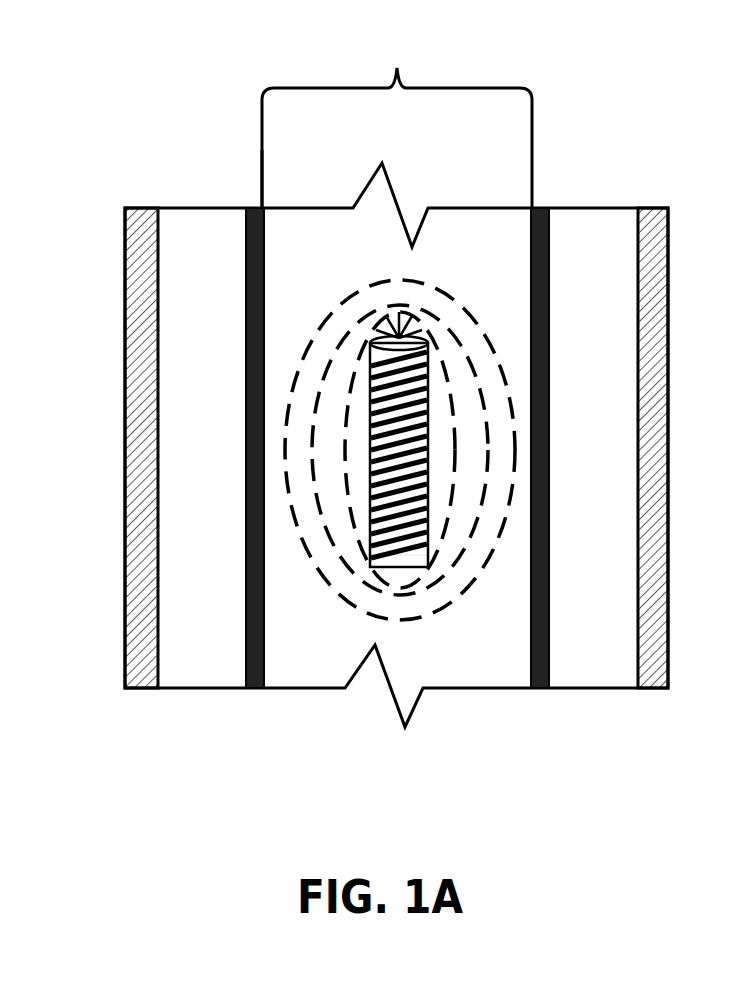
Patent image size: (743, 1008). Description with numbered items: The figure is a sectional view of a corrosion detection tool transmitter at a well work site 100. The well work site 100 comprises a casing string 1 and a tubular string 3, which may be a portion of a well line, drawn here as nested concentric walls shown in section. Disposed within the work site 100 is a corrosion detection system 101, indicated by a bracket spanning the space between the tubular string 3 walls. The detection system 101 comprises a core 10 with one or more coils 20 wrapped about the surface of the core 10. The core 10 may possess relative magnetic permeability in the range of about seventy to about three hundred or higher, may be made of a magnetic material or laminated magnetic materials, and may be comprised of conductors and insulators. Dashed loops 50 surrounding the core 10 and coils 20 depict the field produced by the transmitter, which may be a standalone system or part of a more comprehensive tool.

The casing string 1 is at (652, 195).
The tubular string 3 is at (541, 195).
The well work site 100 is at (233, 80).
The corrosion detection system 101 is at (397, 105).
The magnetic field lines 50 is at (275, 440).
The core 10 is at (400, 590).
The coil 20 is at (362, 585).